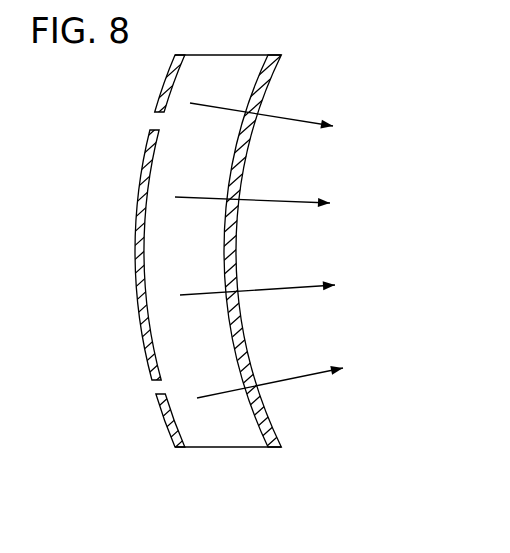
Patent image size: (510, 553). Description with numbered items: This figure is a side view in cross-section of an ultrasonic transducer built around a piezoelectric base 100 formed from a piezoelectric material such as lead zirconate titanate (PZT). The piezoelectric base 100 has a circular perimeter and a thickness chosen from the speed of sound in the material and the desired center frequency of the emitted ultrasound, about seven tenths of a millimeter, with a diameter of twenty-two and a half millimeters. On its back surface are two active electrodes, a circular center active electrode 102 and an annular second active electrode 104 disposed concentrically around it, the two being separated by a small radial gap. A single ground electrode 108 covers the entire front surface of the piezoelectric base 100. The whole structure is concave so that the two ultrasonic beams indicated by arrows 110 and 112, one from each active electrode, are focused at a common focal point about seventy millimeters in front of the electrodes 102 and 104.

The piezoelectric base 100 is at (225, 457).
The active electrode 102 is at (139, 232).
The second active electrode 104 is at (164, 77).
The ground electrode 108 is at (274, 421).
The ultrasonic beam 110 is at (287, 113).
The ultrasonic beam 112 is at (268, 200).